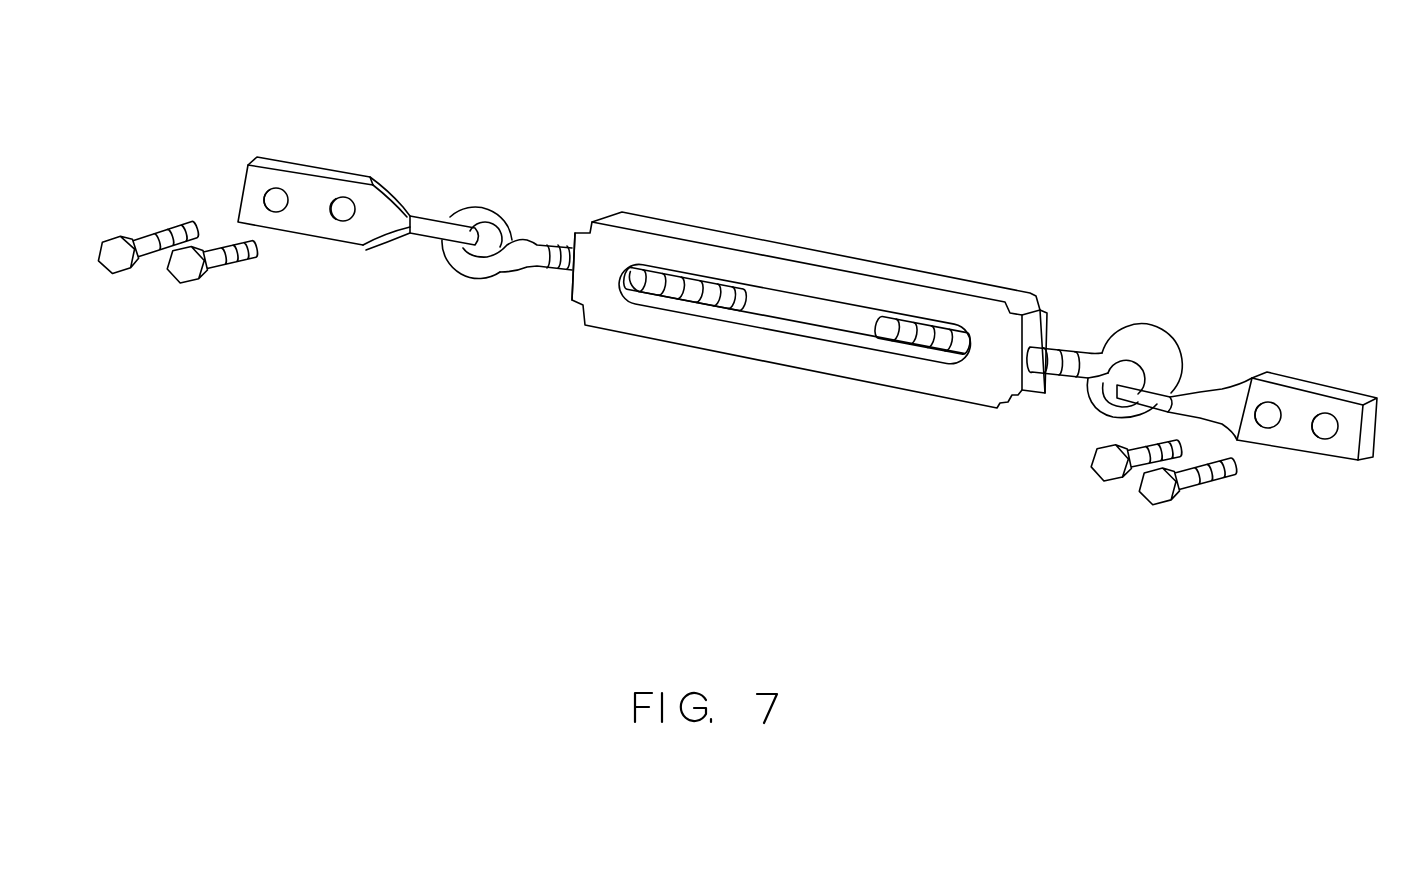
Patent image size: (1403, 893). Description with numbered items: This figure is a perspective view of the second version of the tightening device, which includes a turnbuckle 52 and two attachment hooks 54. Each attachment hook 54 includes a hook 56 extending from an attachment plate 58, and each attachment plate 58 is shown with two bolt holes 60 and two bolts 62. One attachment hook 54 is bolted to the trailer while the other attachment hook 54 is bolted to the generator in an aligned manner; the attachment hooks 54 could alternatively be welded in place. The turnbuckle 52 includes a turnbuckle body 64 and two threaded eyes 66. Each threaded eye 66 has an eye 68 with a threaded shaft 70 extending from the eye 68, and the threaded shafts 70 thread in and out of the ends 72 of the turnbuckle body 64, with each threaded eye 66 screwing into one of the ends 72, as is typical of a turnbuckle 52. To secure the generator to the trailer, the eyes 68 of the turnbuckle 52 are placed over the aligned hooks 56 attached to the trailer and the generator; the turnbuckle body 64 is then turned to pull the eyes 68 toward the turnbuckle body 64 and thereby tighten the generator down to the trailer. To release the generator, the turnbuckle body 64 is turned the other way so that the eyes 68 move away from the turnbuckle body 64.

The turnbuckle 52 is at (860, 118).
The attachment hook 54 is at (335, 91).
The hook 56 is at (427, 237).
The attachment plate 58 is at (318, 233).
The bolt hole 60 is at (262, 188).
The bolt 62 is at (113, 262).
The turnbuckle body 64 is at (698, 230).
The threaded eye 66 is at (535, 210).
The eye 68 is at (481, 207).
The threaded shaft 70 is at (555, 262).
The end of turnbuckle body 72 is at (587, 232).